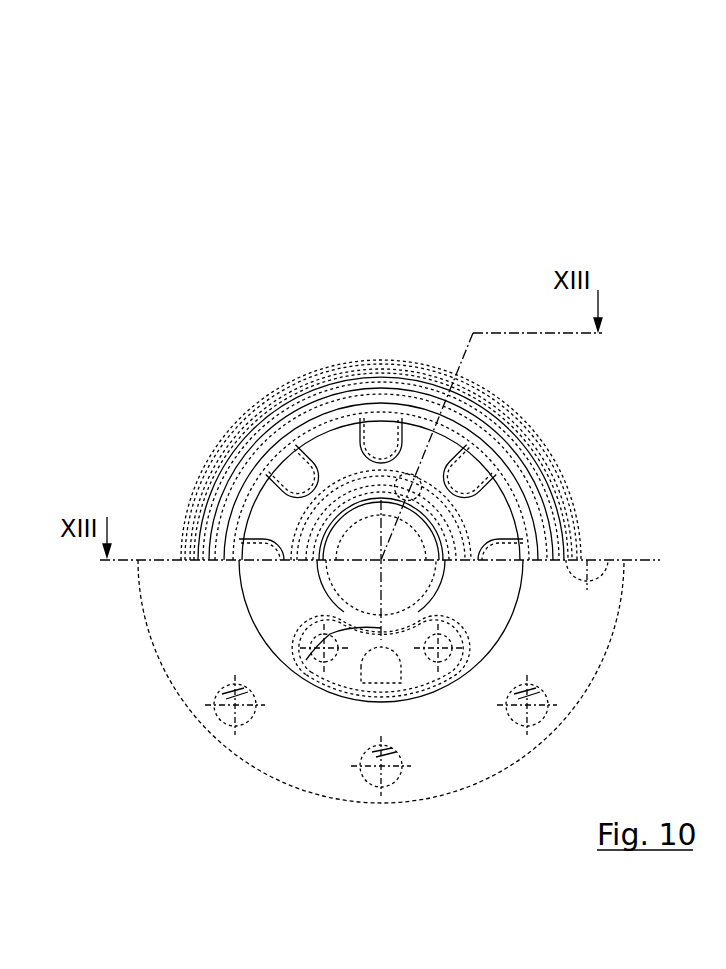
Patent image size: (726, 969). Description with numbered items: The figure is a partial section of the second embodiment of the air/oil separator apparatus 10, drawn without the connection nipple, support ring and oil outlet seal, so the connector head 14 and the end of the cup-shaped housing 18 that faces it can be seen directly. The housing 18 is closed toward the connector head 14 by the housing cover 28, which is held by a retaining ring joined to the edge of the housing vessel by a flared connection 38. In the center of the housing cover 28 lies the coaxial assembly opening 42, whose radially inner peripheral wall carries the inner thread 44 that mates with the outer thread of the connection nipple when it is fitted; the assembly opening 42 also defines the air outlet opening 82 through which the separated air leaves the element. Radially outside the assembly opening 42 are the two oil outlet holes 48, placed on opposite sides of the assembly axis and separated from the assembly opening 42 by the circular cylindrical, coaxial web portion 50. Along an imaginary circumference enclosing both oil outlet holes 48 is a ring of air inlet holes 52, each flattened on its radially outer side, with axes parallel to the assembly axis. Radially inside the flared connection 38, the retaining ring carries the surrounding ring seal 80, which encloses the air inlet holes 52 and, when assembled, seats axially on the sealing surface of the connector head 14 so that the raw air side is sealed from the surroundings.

The air/oil separator apparatus 10 is at (530, 250).
The connector head 14 is at (166, 654).
The housing 18 is at (229, 437).
The housing cover 28 is at (239, 501).
The flared connection 38 is at (310, 380).
The surrounding ring seal 80 is at (363, 397).
The air inlet holes 52 is at (300, 477).
The oil outlet holes 48 is at (417, 490).
The assembly opening 42 is at (387, 523).
The inner thread 44 is at (433, 550).
The air outlet opening 82 is at (379, 557).
The web portion 50 is at (407, 505).